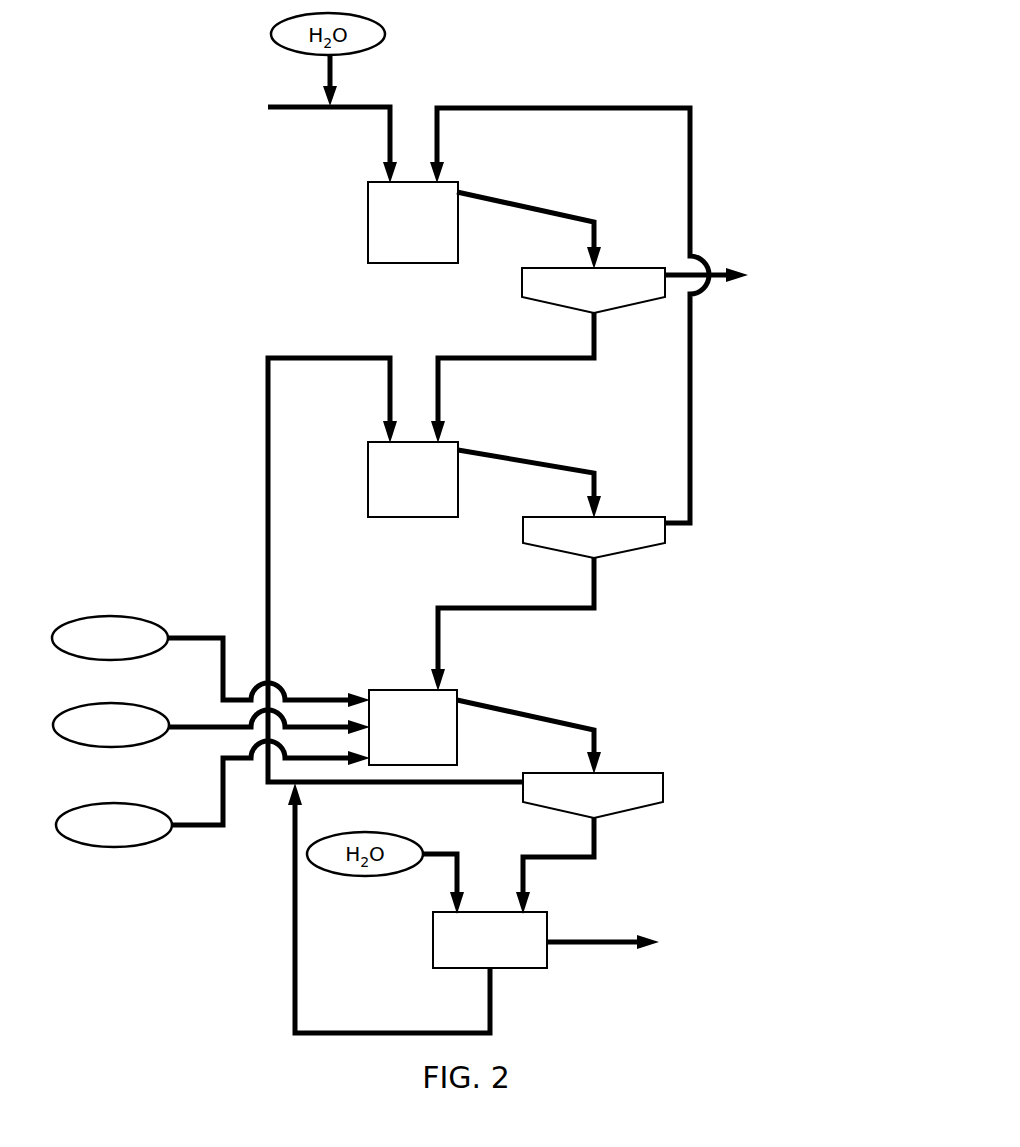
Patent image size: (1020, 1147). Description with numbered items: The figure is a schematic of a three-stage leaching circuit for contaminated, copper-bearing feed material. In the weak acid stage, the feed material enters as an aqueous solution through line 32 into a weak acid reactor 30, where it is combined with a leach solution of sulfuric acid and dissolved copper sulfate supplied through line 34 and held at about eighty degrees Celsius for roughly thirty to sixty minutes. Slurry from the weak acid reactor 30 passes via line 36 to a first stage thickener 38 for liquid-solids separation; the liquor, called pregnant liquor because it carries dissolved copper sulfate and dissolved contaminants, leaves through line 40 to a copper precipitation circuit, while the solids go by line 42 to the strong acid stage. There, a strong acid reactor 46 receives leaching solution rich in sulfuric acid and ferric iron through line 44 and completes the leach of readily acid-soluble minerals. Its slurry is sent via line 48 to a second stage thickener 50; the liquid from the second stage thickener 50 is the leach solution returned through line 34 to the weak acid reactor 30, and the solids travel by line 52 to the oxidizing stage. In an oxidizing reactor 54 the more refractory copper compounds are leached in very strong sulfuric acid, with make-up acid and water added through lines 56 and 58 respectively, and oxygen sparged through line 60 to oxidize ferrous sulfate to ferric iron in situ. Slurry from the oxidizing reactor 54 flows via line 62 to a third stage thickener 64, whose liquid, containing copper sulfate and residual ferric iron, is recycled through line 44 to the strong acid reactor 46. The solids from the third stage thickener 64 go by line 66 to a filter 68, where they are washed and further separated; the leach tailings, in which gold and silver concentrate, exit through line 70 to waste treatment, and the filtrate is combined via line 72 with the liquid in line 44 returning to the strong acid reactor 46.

The weak acid reactor 30 is at (413, 222).
The line 32 is at (300, 110).
The line 34 is at (572, 106).
The line 36 is at (556, 210).
The first stage thickener 38 is at (593, 290).
The line 40 is at (675, 278).
The line 42 is at (485, 356).
The line 44 is at (268, 418).
The strong acid reactor 46 is at (413, 479).
The line 48 is at (527, 456).
The second stage thickener 50 is at (594, 537).
The line 52 is at (495, 606).
The oxidizing reactor 54 is at (413, 727).
The line 56 is at (192, 635).
The line 58 is at (180, 725).
The line 60 is at (185, 822).
The line 62 is at (543, 712).
The third stage thickener 64 is at (593, 795).
The line 66 is at (562, 860).
The filter 68 is at (490, 940).
The line 70 is at (588, 945).
The line 72 is at (293, 937).